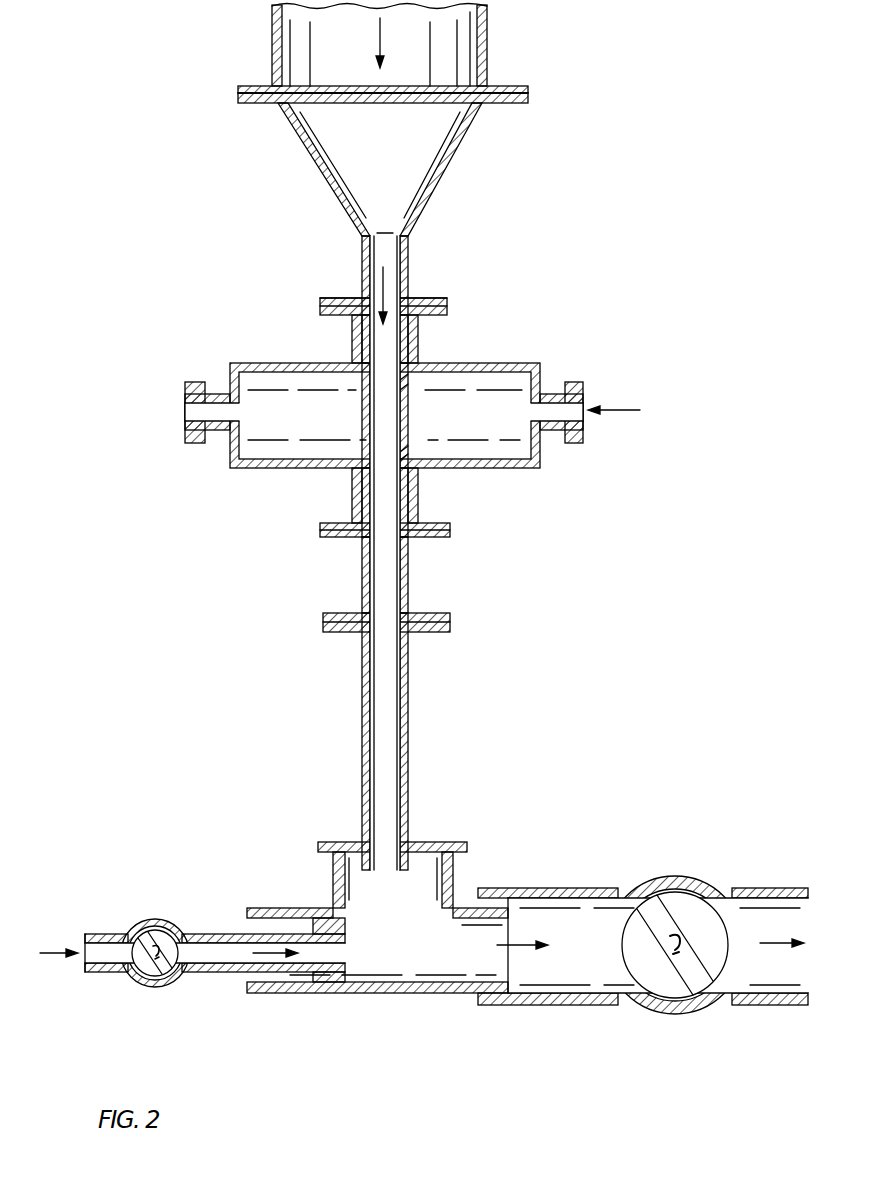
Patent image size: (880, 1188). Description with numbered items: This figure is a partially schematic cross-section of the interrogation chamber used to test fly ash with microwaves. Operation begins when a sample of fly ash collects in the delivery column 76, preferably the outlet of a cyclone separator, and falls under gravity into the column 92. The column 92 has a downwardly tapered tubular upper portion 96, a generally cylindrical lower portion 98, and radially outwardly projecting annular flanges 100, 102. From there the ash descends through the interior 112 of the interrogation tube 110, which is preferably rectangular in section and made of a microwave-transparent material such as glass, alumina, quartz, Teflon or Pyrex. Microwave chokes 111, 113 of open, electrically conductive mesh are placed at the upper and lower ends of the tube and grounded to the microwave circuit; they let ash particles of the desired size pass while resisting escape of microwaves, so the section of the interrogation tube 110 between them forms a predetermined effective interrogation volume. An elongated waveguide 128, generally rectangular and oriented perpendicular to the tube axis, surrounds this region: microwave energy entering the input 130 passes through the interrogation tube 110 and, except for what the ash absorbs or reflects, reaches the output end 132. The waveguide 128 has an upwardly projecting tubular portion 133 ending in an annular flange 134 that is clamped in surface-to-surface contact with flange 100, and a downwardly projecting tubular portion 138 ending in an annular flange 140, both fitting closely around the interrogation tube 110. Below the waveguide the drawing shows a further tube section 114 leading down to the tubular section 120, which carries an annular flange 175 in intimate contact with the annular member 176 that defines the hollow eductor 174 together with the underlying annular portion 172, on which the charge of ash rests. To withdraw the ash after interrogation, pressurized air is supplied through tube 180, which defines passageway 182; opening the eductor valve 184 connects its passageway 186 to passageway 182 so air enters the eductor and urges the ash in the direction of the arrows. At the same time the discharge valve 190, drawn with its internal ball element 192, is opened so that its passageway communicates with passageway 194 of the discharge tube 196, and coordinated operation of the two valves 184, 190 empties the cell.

The delivery column 76 is at (273, 50).
The annular flange 102 is at (504, 104).
The column 92 is at (320, 188).
The downwardly tapered tubular upper portion 96 is at (329, 162).
The generally cylindrical lower portion 98 is at (360, 262).
The annular flange 100 is at (334, 296).
The annular flange 134 is at (322, 316).
The upwardly projecting tubular portion 133 is at (352, 344).
The interior of interrogation tube 112 is at (416, 344).
The waveguide 128 is at (510, 354).
The input 130 is at (587, 385).
The output end 132 is at (184, 416).
The microwave choke 111 is at (412, 390).
The interrogation tube 110 is at (414, 420).
The microwave choke 113 is at (412, 449).
The downwardly projecting tubular portion 138 is at (352, 494).
The annular flange 140 is at (320, 522).
The conduit 114 is at (350, 567).
The tubular section 120 is at (354, 660).
The annular flange 175 is at (439, 844).
The eductor 174 is at (413, 904).
The annular member 176 is at (323, 880).
The annular portion 172 is at (386, 986).
The tube 180 is at (111, 934).
The passageway 182 is at (92, 966).
The eductor valve 184 is at (152, 907).
The passageway 186 is at (164, 982).
The discharge valve 190 is at (698, 876).
The valve ball 192 is at (664, 896).
The passageway 194 is at (772, 998).
The discharge tube 196 is at (586, 988).